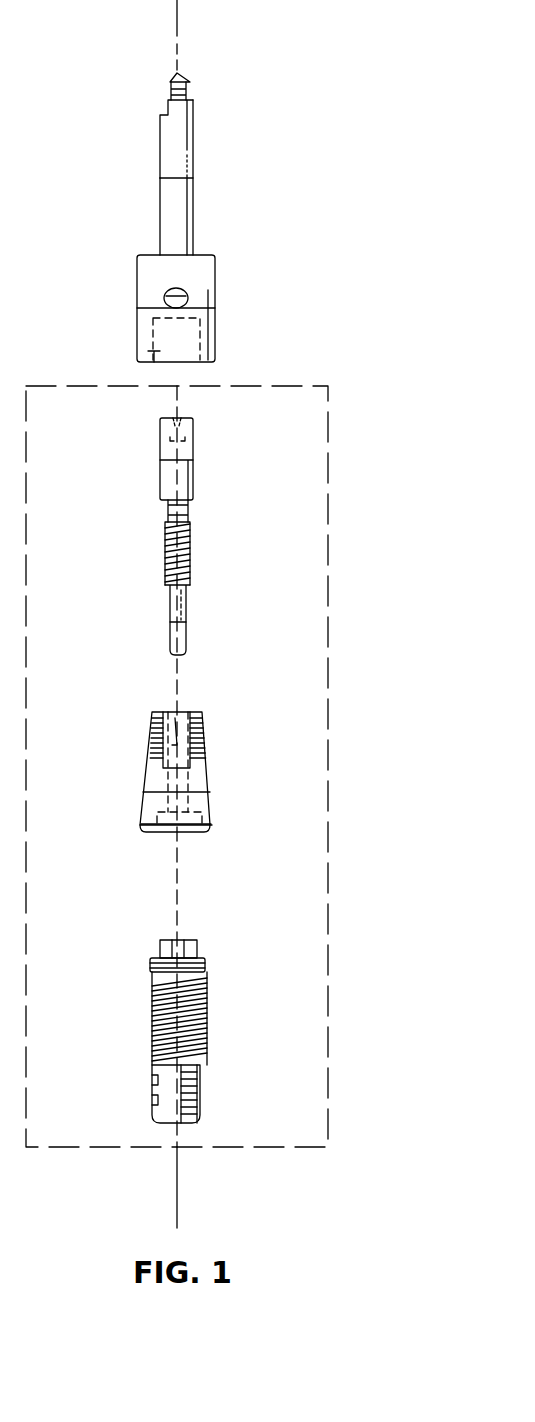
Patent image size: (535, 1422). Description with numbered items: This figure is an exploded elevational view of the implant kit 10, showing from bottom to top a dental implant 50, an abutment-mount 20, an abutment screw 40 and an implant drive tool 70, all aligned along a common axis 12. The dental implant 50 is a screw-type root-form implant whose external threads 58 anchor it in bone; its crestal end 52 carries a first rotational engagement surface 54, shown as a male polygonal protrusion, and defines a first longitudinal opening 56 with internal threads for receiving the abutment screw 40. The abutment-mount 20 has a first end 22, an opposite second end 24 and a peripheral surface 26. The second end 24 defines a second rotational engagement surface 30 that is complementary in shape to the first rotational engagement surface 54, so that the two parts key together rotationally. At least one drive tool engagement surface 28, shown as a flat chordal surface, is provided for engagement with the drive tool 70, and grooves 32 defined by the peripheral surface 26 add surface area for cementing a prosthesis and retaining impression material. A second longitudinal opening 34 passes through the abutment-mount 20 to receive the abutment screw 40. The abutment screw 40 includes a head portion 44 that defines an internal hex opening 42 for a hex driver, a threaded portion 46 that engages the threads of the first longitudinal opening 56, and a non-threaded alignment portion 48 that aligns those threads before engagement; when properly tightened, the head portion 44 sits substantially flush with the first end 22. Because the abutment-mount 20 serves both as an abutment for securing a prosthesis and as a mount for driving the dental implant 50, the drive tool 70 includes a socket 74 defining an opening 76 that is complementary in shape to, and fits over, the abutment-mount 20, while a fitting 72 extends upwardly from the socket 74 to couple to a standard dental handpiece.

The implant kit 10 is at (330, 561).
The common axis 12 is at (177, 30).
The abutment-mount 20 is at (180, 764).
The first end 22 is at (202, 715).
The second end 24 is at (145, 835).
The peripheral surface 26 is at (155, 783).
The drive tool engagement surface 28 is at (150, 735).
The second rotational engagement surface 30 is at (205, 835).
The grooves 32 is at (148, 725).
The second longitudinal opening 34 is at (166, 712).
The abutment screw 40 is at (192, 526).
The internal hex opening 42 is at (177, 416).
The head portion 44 is at (160, 477).
The threaded portion 46 is at (190, 557).
The non-threaded alignment portion 48 is at (186, 632).
The dental implant 50 is at (178, 1000).
The crestal end 52 is at (207, 960).
The first rotational engagement surface 54 is at (155, 950).
The first longitudinal opening 56 is at (185, 938).
The threads 58 is at (152, 1028).
The implant drive tool 70 is at (228, 164).
The fitting 72 is at (195, 143).
The socket 74 is at (182, 310).
The opening 76 is at (137, 346).